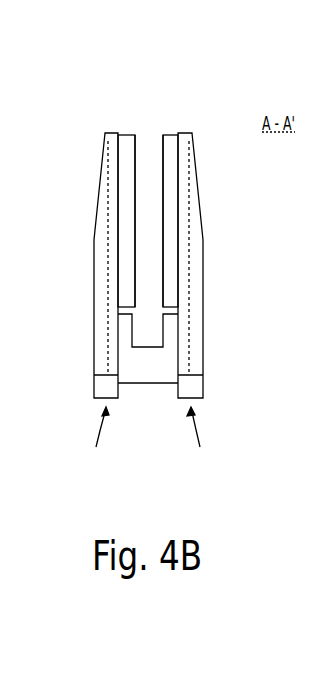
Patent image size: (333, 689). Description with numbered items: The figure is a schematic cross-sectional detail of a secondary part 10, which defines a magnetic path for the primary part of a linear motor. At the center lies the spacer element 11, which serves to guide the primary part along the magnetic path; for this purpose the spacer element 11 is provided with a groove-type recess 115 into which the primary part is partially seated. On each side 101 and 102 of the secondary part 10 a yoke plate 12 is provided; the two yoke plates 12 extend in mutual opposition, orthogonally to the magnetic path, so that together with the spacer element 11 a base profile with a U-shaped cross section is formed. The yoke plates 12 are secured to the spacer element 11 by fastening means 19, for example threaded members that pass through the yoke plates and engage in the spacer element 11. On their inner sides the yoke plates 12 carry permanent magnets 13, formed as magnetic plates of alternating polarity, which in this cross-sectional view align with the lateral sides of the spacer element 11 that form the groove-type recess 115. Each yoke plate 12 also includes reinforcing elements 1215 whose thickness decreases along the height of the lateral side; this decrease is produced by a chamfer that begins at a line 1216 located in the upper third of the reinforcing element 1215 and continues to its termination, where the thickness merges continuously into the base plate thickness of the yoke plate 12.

The secondary part 10 is at (232, 95).
The spacer element 11 is at (155, 378).
The yoke plate 12 is at (107, 147).
The permanent magnets 13 is at (163, 143).
The fastening means 19 is at (102, 375).
The side of secondary part 101 is at (199, 441).
The side of secondary part 102 is at (98, 441).
The groove-type recess 115 is at (148, 330).
The reinforcing element 1215 is at (96, 228).
The line 1216 is at (93, 240).